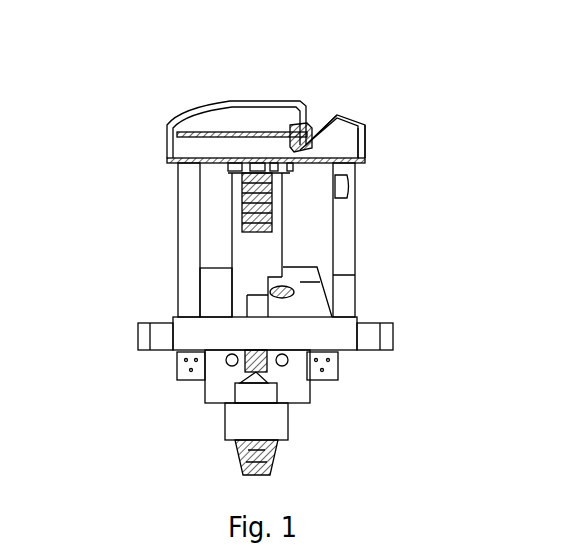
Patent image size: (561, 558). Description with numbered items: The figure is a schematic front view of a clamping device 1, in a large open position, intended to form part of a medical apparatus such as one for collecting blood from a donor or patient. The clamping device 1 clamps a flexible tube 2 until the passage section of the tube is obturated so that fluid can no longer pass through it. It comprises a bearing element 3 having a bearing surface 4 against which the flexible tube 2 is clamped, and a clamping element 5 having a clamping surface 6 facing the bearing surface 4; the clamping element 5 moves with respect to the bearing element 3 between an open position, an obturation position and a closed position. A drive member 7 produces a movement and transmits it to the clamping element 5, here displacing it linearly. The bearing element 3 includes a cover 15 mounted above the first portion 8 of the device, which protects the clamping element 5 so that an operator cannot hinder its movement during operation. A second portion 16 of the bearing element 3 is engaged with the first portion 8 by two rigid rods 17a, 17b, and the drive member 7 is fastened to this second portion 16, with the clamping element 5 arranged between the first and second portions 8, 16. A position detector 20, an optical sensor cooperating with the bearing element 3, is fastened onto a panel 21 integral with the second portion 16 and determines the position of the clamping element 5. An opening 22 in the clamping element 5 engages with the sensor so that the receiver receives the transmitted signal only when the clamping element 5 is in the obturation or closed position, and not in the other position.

The clamping device 1 is at (252, 100).
The flexible tube 2 is at (313, 125).
The bearing element 3 is at (290, 175).
The bearing surface 4 is at (367, 134).
The clamping element 5 is at (240, 257).
The clamping surface 6 is at (307, 140).
The drive member 7 is at (265, 420).
The first portion 8 is at (183, 150).
The cover 15 is at (193, 108).
The second portion 16 is at (197, 337).
The rigid rod 17a is at (350, 258).
The rigid rod 17b is at (178, 282).
The position detector 20 is at (296, 294).
The panel 21 is at (310, 278).
The opening 22 is at (268, 280).